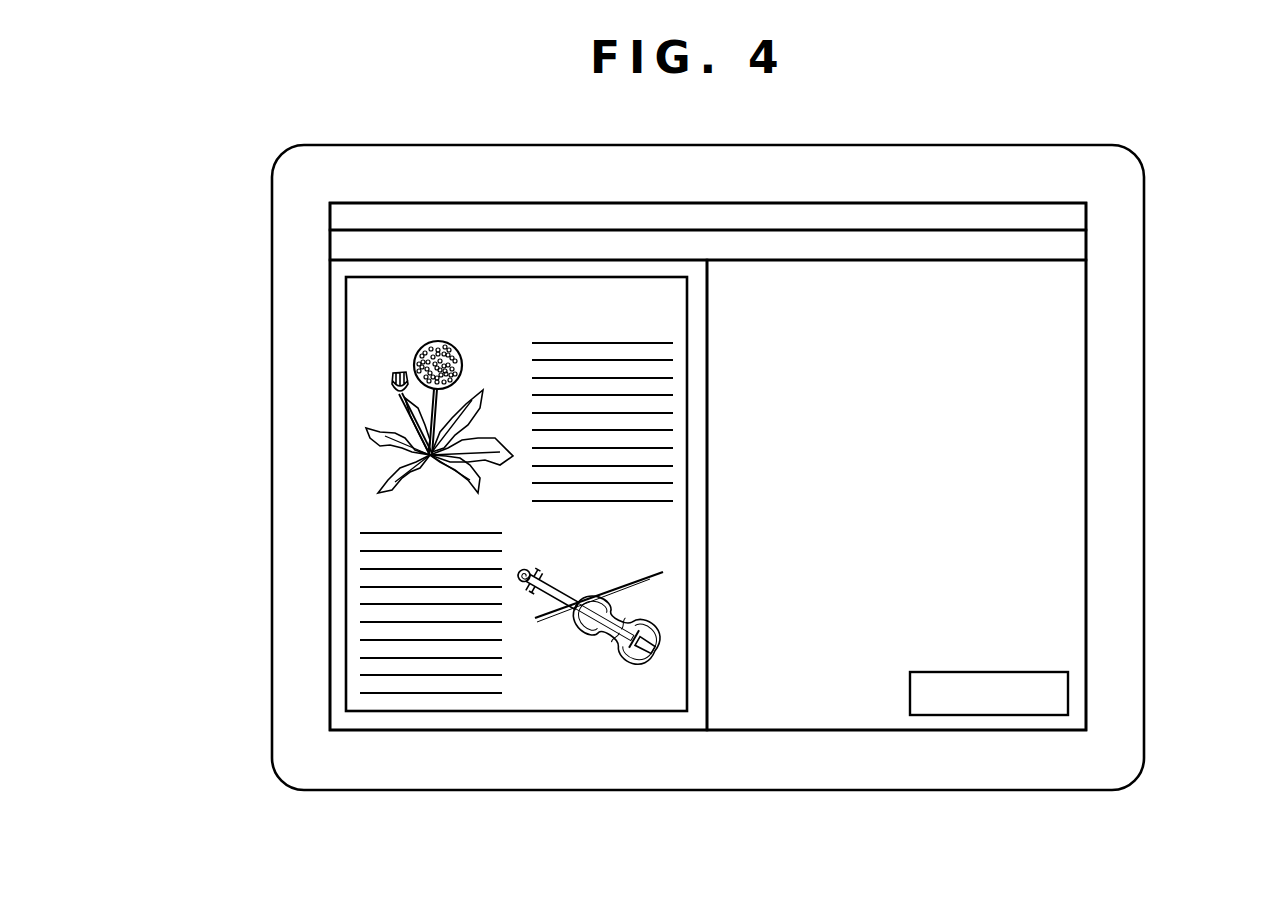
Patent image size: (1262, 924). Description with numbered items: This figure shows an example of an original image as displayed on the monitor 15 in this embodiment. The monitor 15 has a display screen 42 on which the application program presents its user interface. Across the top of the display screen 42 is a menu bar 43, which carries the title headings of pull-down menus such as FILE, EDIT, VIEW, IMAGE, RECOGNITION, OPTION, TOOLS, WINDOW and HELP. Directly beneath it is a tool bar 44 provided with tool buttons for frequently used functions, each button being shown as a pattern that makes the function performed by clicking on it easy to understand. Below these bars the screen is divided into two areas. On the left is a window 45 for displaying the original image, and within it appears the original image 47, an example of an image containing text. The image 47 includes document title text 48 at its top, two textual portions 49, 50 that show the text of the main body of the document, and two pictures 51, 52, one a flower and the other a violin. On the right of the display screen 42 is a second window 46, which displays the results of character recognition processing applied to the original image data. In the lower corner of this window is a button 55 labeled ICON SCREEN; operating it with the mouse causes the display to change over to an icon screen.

The monitor 15 is at (823, 145).
The display screen 42 is at (1010, 205).
The menu bar 43 is at (347, 216).
The tool bar 44 is at (342, 244).
The window 45 is at (337, 303).
The window 46 is at (1038, 397).
The original image 47 is at (345, 447).
The document title text 48 is at (500, 297).
The textual portion 49 is at (648, 343).
The textual portion 50 is at (365, 590).
The picture 51 is at (395, 388).
The picture 52 is at (612, 642).
The button 55 is at (1068, 692).